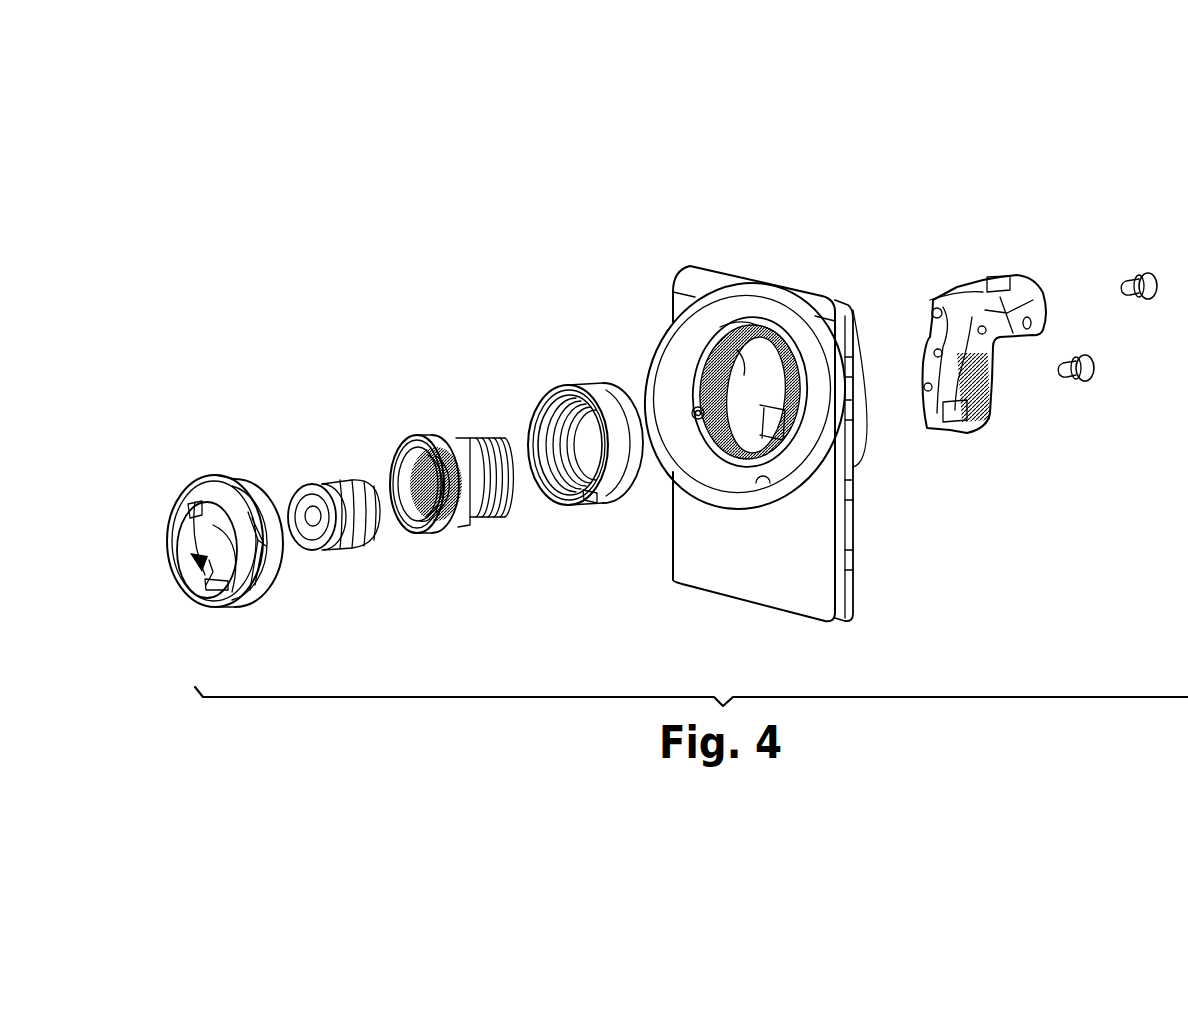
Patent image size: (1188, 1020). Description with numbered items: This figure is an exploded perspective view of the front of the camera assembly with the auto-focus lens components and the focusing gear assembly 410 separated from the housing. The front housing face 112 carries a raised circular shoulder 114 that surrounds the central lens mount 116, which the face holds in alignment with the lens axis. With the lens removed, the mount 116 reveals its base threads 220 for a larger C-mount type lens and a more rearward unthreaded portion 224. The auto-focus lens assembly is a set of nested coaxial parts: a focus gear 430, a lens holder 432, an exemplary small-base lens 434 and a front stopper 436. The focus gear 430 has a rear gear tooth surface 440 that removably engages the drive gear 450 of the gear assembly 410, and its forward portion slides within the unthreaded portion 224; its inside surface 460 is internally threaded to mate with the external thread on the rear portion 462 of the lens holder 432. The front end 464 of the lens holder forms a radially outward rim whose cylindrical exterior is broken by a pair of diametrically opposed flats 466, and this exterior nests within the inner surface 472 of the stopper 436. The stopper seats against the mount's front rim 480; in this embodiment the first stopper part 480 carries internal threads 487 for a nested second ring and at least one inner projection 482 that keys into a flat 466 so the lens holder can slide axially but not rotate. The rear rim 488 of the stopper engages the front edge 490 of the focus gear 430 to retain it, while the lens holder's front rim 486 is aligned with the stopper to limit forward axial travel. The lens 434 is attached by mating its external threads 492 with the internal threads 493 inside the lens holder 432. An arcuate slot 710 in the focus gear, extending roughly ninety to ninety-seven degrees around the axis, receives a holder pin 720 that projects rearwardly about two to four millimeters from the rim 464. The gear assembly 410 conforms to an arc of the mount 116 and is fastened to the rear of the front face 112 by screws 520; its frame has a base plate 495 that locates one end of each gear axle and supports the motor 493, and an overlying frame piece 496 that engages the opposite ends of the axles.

The front housing face 112 is at (845, 608).
The raised circular shoulder 114 is at (730, 515).
The central lens mount 116 is at (725, 465).
The base threads 220 is at (750, 388).
The unthreaded portion 224 is at (770, 345).
The focusing gear assembly 410 is at (966, 262).
The focus gear 430 is at (565, 362).
The lens holder 432 is at (466, 556).
The exemplary lens 434 is at (350, 448).
The front stopper 436 is at (238, 452).
The rear gear tooth surface 440 is at (603, 385).
The drive gear 450 is at (963, 433).
The inside surface 460 is at (622, 487).
The rear portion 462 is at (465, 405).
The front end 464 is at (468, 525).
The flats 466 is at (425, 440).
The inner surface 472 is at (206, 581).
The first stopper part 480 is at (210, 476).
The inner projection 482 is at (200, 512).
The front rim 486 is at (393, 450).
The internal threads 487 is at (240, 475).
The rear rim 488 is at (262, 505).
The front edge 490 is at (586, 500).
The external threads 492 is at (363, 533).
The internal threads 493 is at (435, 497).
The base plate 495 is at (983, 366).
The overlying frame piece 496 is at (942, 340).
The screws 520 is at (1077, 383).
The arcuate slot 710 is at (555, 395).
The holder pin 720 is at (487, 450).